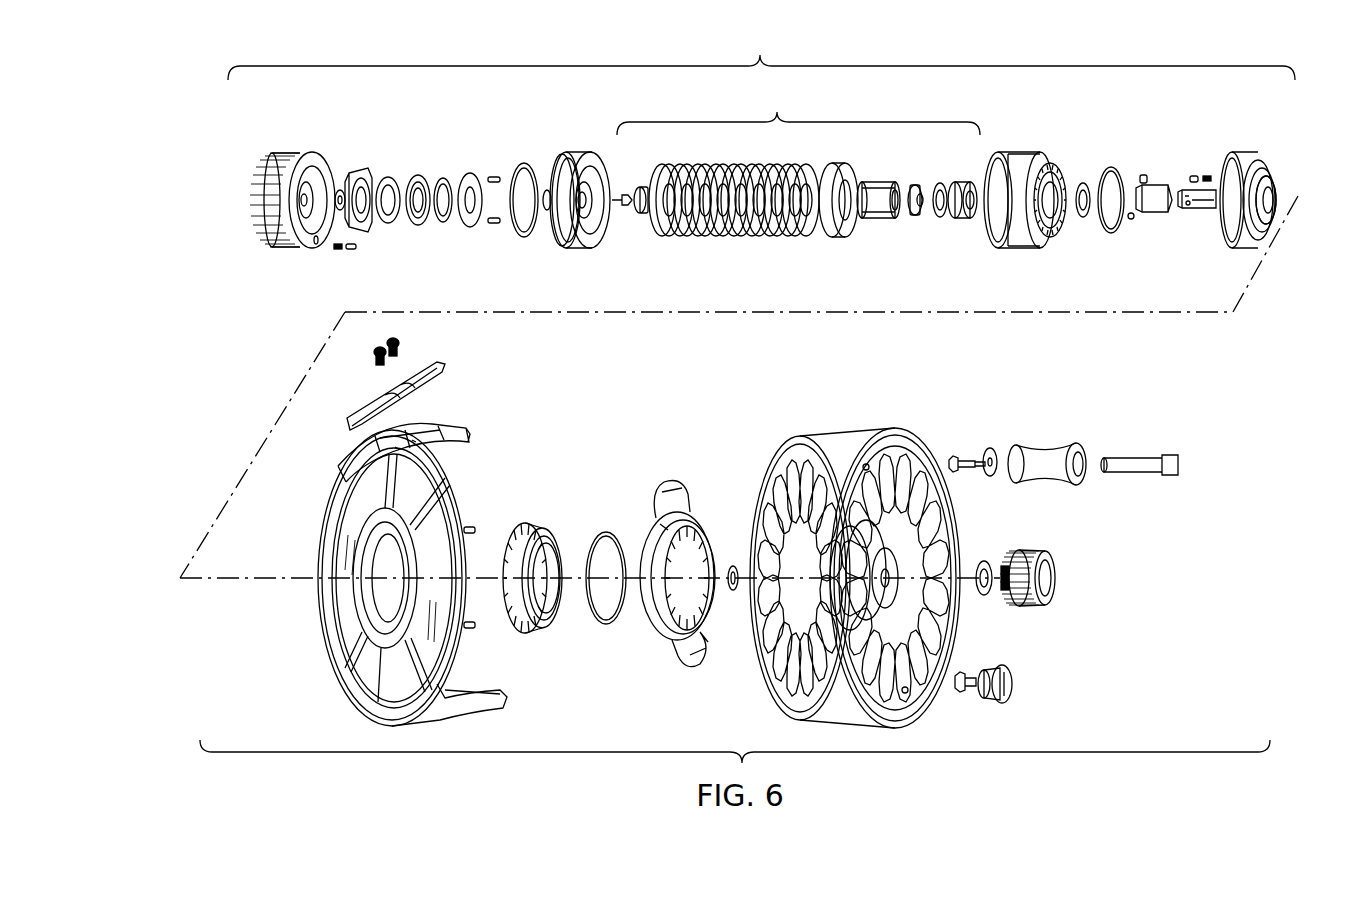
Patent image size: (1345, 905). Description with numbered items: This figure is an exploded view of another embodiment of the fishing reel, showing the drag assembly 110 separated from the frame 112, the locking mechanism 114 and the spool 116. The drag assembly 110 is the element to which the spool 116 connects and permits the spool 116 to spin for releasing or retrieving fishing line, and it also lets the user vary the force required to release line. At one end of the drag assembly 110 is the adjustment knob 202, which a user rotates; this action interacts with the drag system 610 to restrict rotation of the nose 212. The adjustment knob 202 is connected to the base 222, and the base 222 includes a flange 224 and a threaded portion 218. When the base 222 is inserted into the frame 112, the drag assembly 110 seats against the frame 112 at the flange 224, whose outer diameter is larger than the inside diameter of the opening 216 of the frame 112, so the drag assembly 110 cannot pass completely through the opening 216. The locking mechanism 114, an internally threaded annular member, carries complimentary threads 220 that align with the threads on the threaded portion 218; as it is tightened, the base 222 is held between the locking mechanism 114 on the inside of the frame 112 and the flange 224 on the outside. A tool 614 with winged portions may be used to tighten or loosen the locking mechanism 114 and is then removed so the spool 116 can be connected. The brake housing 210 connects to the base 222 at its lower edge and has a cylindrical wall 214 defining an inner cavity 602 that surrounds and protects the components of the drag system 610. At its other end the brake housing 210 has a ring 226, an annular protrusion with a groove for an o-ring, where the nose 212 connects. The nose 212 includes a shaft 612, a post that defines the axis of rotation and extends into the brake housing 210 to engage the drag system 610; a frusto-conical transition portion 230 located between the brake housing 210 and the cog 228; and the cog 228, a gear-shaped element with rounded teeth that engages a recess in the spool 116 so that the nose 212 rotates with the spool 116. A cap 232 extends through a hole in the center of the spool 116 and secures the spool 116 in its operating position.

The drag assembly 110 is at (761, 56).
The adjustment knob 202 is at (291, 160).
The threaded portion 218 is at (572, 158).
The flange 224 is at (556, 232).
The base 222 is at (566, 250).
The drag system 610 is at (798, 163).
The inner cavity 602 is at (988, 238).
The brake housing 210 is at (1031, 150).
The cylindrical wall 214 is at (1024, 238).
The ring 226 is at (1066, 222).
The nose 212 is at (1238, 150).
The cog 228 is at (1270, 198).
The shaft 612 is at (1206, 208).
The transition portion 230 is at (1236, 238).
The frame 112 is at (328, 633).
The opening 216 is at (400, 634).
The locking mechanism 114 is at (535, 526).
The complimentary threads 220 is at (548, 622).
The tool 614 is at (660, 630).
The spool 116 is at (895, 432).
The cap 232 is at (1052, 580).